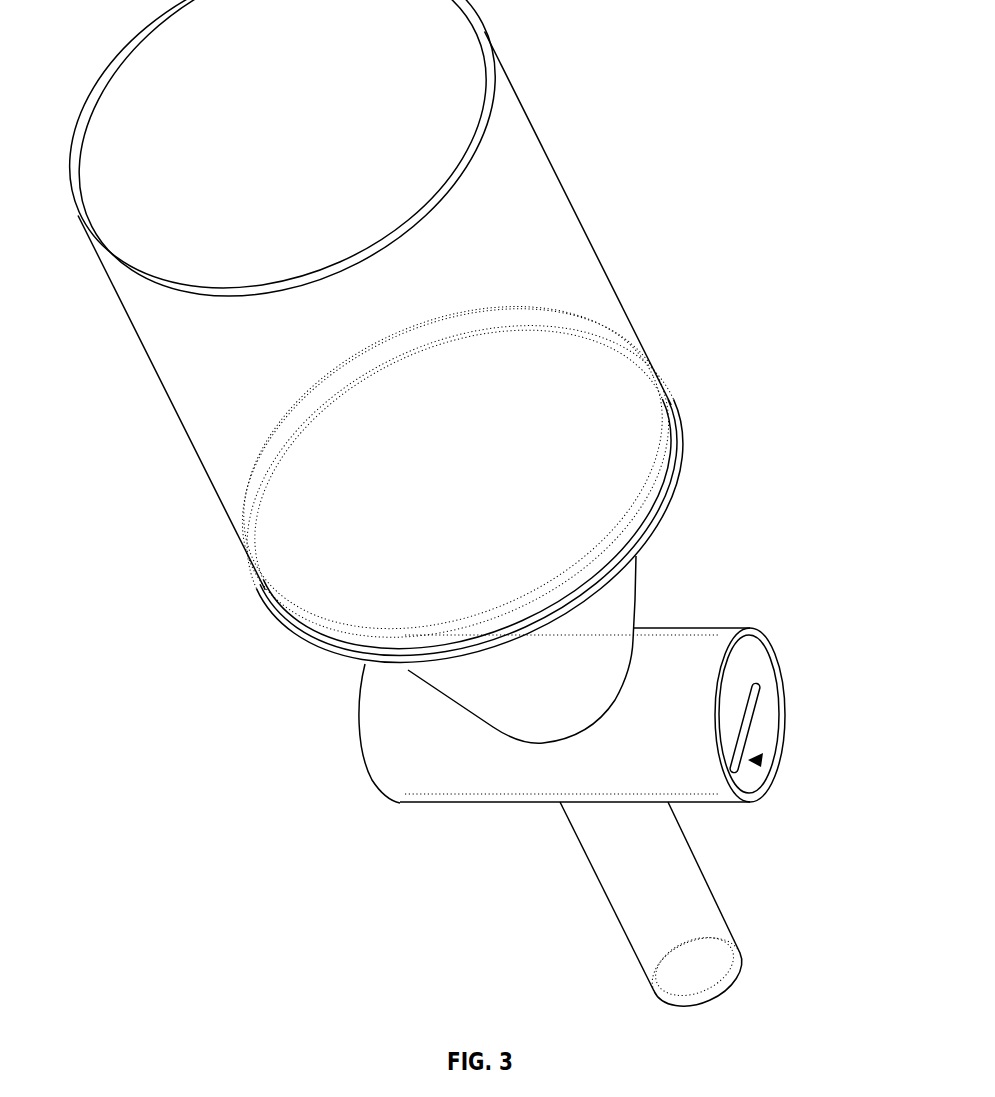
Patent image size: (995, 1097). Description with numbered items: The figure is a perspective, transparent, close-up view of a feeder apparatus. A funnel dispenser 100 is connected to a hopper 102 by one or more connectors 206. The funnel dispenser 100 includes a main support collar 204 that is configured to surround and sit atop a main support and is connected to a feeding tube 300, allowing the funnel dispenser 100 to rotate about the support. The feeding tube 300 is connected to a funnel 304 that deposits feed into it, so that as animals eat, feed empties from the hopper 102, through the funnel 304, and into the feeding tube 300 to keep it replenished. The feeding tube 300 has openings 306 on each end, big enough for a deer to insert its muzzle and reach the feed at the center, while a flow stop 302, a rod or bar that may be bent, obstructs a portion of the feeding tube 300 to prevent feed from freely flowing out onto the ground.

The funnel dispenser 100 is at (777, 548).
The hopper 102 is at (535, 163).
The main support collar 204 is at (643, 947).
The connectors 206 is at (272, 497).
The feeding tube 300 is at (400, 782).
The flow stop 302 is at (758, 689).
The funnel 304 is at (625, 607).
The openings 306 is at (752, 760).